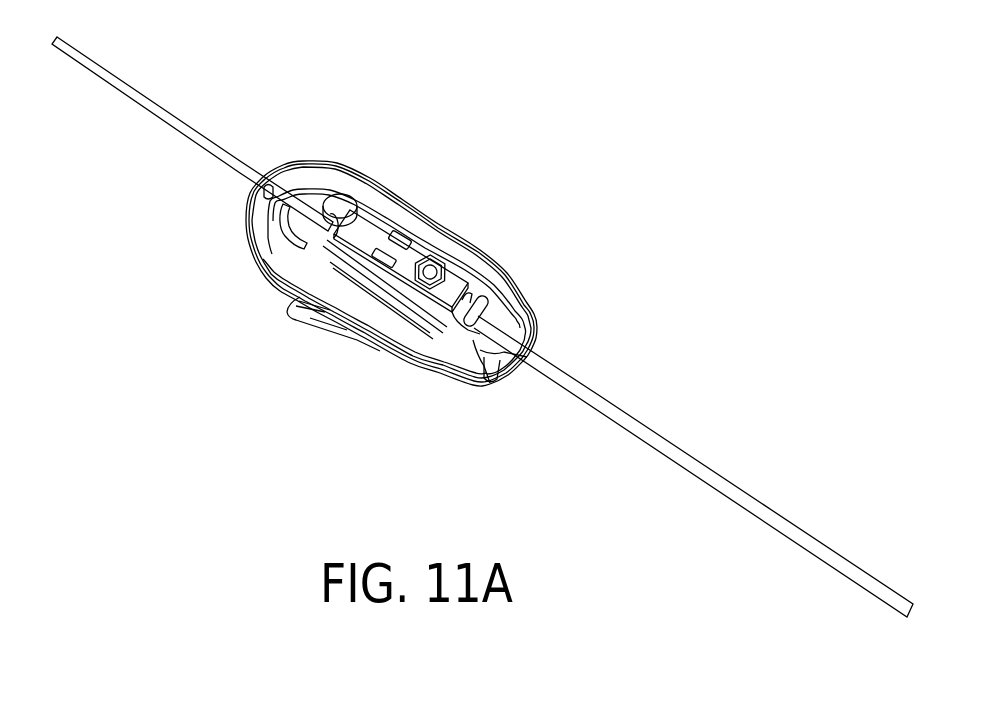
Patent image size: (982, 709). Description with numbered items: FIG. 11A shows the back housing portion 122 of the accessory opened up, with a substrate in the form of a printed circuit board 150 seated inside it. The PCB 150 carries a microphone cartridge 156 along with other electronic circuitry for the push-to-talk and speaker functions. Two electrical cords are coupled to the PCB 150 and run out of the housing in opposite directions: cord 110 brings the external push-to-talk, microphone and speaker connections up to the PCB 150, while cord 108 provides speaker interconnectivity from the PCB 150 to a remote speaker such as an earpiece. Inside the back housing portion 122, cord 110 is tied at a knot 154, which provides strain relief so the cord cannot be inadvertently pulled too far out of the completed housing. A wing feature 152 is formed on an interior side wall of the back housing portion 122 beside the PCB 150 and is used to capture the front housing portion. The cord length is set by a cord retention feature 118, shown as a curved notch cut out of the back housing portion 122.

The electrical cord 108 is at (181, 122).
The electrical cord 110 is at (628, 416).
The back housing portion 122 is at (318, 162).
The microphone cartridge 156 is at (337, 200).
The printed circuit board 150 is at (372, 226).
The knot 154 is at (483, 300).
The wing feature 152 is at (302, 292).
The cord retention feature 118 is at (482, 387).